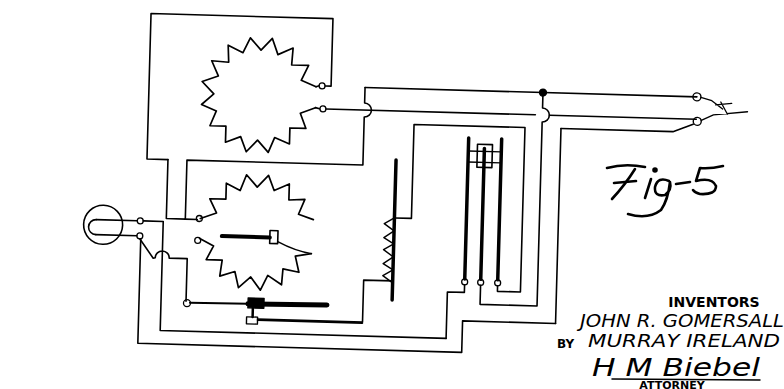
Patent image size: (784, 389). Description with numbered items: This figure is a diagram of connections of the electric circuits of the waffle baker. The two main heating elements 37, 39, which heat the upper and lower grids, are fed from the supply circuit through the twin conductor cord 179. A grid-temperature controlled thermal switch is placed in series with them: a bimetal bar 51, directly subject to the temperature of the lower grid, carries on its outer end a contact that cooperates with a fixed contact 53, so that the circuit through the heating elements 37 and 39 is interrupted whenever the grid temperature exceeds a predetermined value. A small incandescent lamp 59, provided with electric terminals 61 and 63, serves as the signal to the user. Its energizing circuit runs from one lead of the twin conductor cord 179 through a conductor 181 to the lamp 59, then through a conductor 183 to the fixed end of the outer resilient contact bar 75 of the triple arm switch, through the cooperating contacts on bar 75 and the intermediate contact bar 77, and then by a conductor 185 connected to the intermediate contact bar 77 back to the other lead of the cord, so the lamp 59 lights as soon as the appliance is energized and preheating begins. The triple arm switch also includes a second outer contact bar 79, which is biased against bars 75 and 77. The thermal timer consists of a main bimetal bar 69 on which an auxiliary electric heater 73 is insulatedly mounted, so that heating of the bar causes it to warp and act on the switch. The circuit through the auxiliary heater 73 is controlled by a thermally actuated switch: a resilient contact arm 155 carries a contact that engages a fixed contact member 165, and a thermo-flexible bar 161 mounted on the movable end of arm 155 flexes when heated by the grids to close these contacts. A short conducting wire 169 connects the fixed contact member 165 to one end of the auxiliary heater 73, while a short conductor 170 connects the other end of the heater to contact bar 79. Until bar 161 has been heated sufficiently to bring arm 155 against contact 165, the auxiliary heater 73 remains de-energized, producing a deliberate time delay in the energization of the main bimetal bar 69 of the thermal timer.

The heating element 37 is at (253, 232).
The heating element 39 is at (264, 95).
The bimetal bar 51 is at (316, 260).
The fixed contact 53 is at (282, 240).
The incandescent lamp 59 is at (92, 228).
The electric terminal 61 is at (145, 228).
The electric terminal 63 is at (142, 252).
The main bimetal bar 69 is at (396, 172).
The auxiliary electric heater 73 is at (389, 250).
The outer resilient contact bar 75 is at (469, 192).
The intermediate contact bar 77 is at (486, 202).
The second outer contact bar 79 is at (500, 201).
The resilient contact arm 155 is at (209, 317).
The thermo-flexible bar 161 is at (306, 309).
The fixed contact member 165 is at (259, 334).
The conducting wire 169 is at (340, 327).
The conductor 170 is at (449, 129).
The twin conductor cord 179 is at (736, 103).
The conductor 181 is at (562, 148).
The conductor 183 is at (404, 342).
The conductor 185 is at (562, 263).